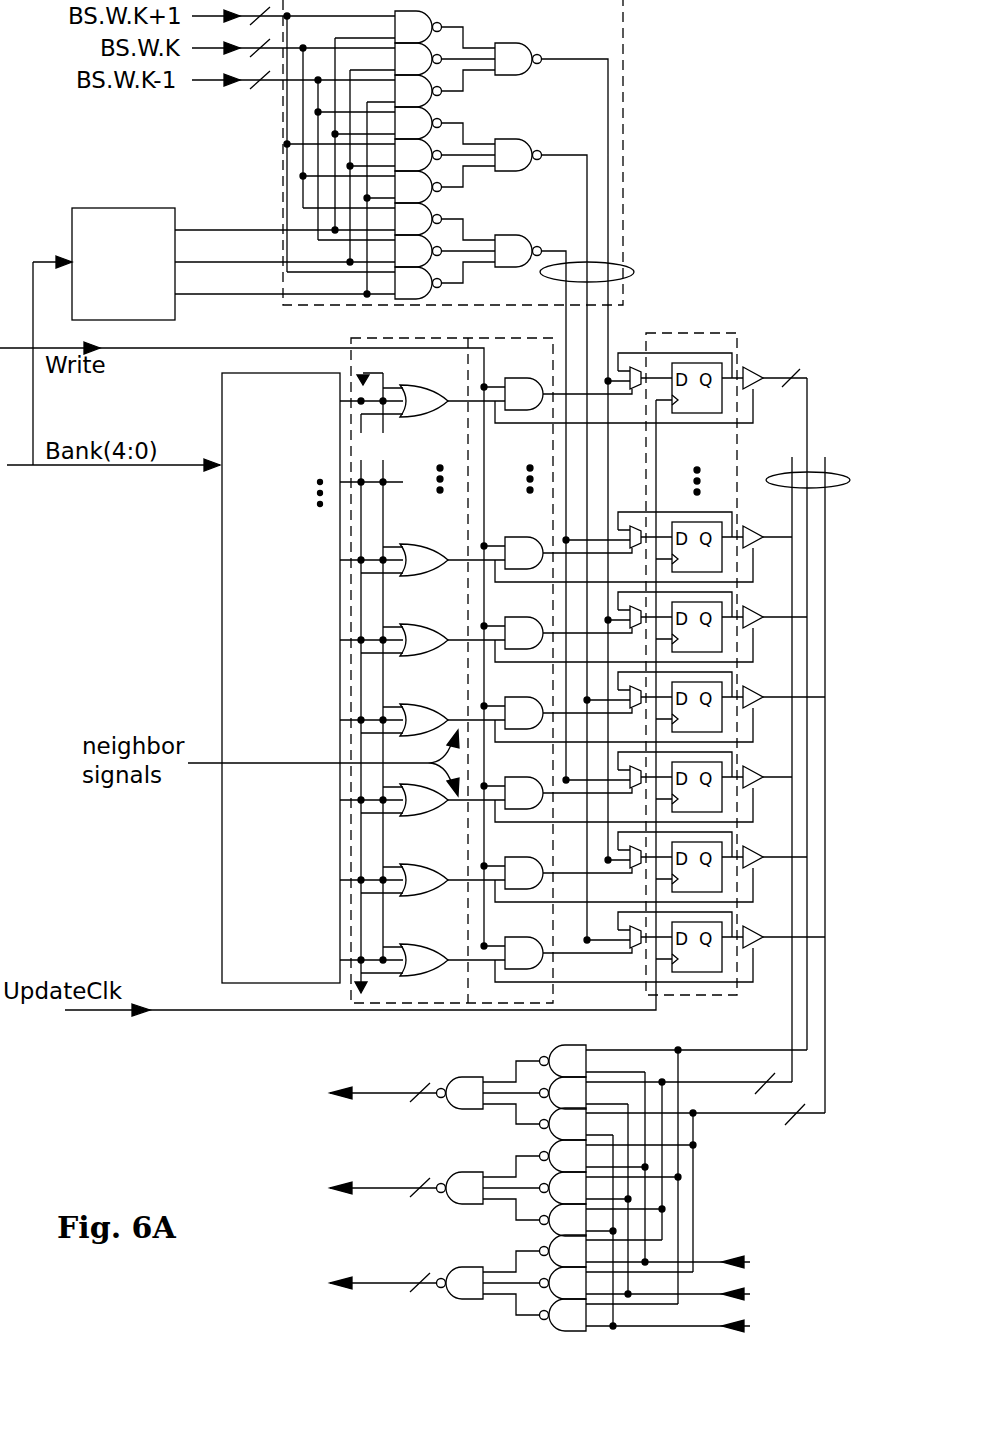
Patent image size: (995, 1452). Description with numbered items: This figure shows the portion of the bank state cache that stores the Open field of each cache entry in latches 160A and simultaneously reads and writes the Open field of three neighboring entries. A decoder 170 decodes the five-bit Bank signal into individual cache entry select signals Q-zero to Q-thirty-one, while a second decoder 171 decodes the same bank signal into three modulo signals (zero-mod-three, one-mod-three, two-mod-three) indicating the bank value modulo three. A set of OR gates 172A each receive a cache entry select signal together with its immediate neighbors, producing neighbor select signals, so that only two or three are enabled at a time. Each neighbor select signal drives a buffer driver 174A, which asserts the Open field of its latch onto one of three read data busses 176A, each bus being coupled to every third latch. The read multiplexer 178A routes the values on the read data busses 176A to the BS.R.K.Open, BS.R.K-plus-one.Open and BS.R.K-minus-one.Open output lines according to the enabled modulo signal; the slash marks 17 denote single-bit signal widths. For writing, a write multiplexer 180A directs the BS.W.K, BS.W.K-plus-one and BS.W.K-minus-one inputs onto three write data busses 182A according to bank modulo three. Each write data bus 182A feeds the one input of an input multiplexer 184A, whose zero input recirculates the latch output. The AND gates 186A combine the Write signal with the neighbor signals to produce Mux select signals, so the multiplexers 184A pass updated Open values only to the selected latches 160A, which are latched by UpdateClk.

The bus width indicator 17 is at (252, 61).
The second decoder 171 is at (163, 207).
The decoder 170 is at (290, 693).
The OR gates 172A is at (446, 670).
The AND gates 186A is at (617, 666).
The write multiplexer 180A is at (399, 152).
The write data busses 182A is at (620, 499).
The input multiplexer 184A is at (634, 363).
The latches 160A is at (689, 654).
The buffer driver 174A is at (784, 644).
The read data busses 176A is at (827, 466).
The read multiplexer 178A is at (480, 1190).